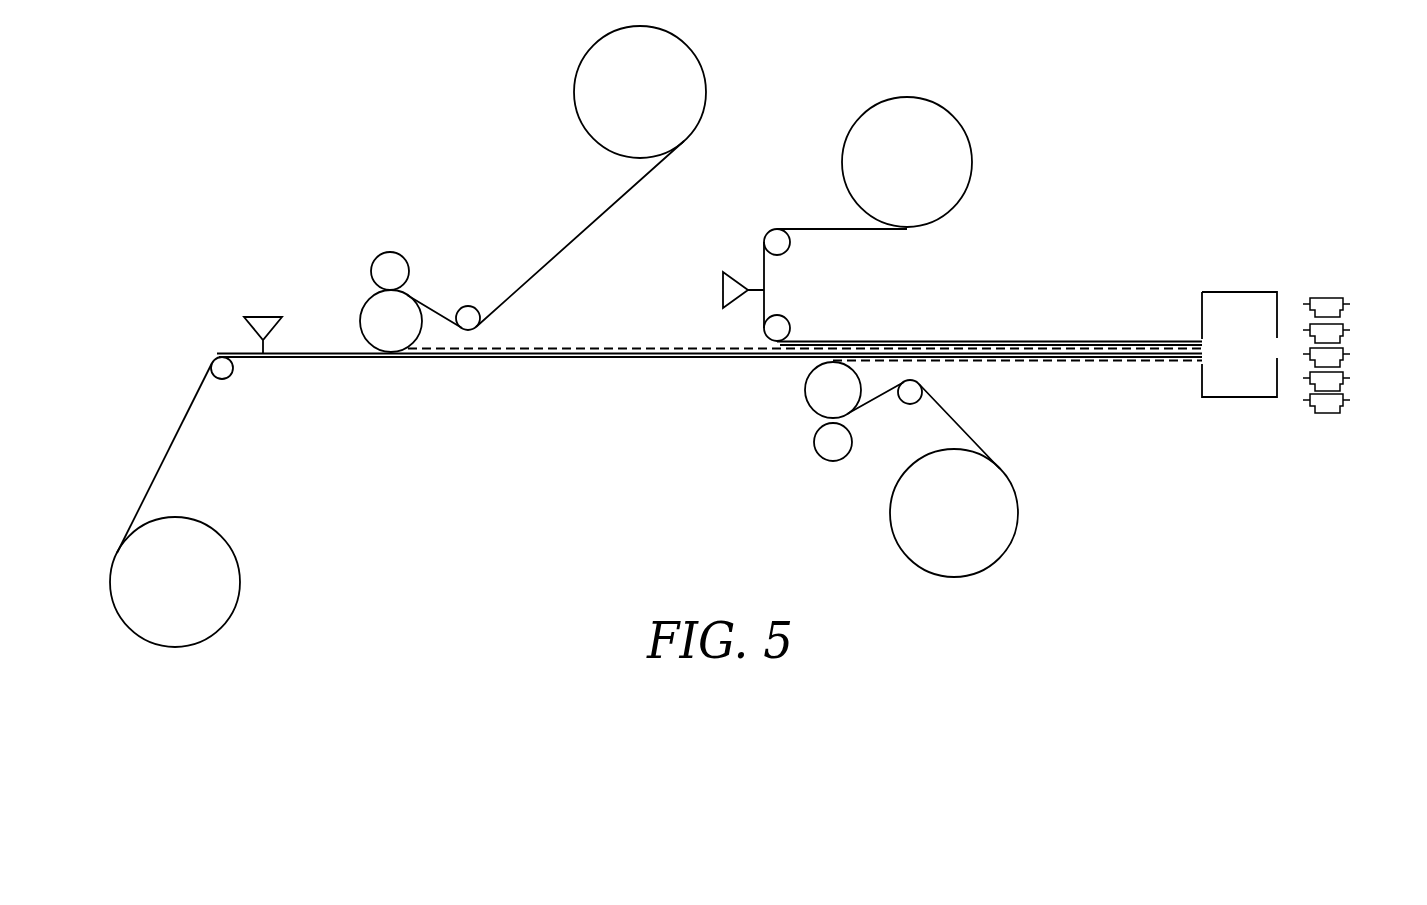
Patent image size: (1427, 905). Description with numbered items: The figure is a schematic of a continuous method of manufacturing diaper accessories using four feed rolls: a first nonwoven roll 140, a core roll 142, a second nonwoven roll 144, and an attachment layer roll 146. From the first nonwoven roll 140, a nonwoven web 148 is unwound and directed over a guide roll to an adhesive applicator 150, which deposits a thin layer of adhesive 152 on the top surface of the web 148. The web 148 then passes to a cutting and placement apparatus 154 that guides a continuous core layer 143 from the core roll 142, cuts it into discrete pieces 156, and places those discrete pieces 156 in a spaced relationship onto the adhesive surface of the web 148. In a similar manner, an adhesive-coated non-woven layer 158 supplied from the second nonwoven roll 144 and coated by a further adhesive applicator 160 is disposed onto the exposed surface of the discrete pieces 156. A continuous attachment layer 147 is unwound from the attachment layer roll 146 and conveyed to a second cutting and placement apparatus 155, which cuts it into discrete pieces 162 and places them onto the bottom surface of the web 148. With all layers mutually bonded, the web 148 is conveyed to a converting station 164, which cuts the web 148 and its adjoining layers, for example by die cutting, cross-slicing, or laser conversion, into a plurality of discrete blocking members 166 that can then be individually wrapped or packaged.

The first nonwoven roll 140 is at (222, 575).
The core roll 142 is at (592, 80).
The continuous core layer 143 is at (570, 240).
The second nonwoven roll 144 is at (938, 128).
The attachment layer roll 146 is at (993, 548).
The continuous attachment layer 147 is at (957, 420).
The nonwoven web 148 is at (174, 442).
The adhesive applicator 150 is at (263, 316).
The adhesive 152 is at (313, 352).
The cutting and placement apparatus 154 is at (378, 305).
The second cutting and placement apparatus 155 is at (817, 393).
The discrete pieces of core layer 156 is at (632, 346).
The adhesive-coated non-woven layer 158 is at (765, 305).
The adhesive applicator 160 is at (722, 288).
The discrete pieces of attachment layer 162 is at (1080, 364).
The converting station 164 is at (1237, 291).
The blocking members 166 is at (1345, 354).